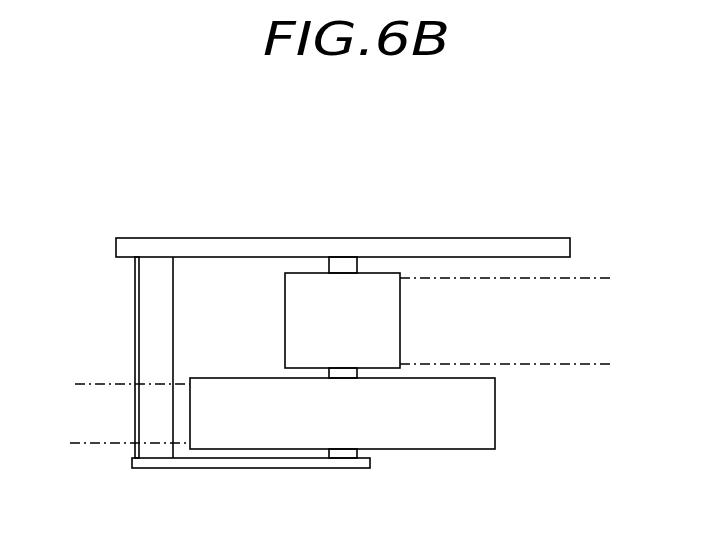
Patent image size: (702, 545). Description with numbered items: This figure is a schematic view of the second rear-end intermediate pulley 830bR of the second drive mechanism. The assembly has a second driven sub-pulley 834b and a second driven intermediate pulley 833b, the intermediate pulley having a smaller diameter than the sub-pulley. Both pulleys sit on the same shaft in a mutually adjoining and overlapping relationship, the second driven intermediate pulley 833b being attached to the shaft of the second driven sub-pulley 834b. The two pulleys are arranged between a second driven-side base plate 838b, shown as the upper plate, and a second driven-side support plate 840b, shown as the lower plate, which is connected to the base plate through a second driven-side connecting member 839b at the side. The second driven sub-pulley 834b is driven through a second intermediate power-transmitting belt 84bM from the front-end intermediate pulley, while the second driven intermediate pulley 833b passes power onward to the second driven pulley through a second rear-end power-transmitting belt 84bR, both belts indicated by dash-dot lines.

The second rear-end intermediate pulley 830bR is at (496, 192).
The second driven-side base plate 838b is at (256, 238).
The second driven-side connecting member 839b is at (135, 310).
The second driven intermediate pulley 833b is at (400, 318).
The second driven sub-pulley 834b is at (495, 413).
The second driven-side support plate 840b is at (213, 468).
The second rear-end power-transmitting belt 84bR is at (604, 276).
The second intermediate power-transmitting belt 84bM is at (85, 445).